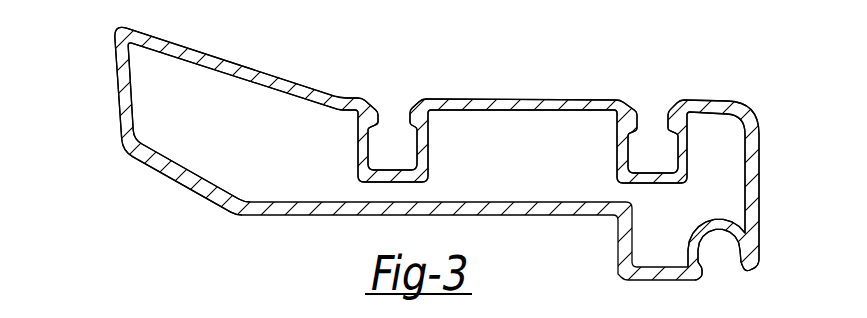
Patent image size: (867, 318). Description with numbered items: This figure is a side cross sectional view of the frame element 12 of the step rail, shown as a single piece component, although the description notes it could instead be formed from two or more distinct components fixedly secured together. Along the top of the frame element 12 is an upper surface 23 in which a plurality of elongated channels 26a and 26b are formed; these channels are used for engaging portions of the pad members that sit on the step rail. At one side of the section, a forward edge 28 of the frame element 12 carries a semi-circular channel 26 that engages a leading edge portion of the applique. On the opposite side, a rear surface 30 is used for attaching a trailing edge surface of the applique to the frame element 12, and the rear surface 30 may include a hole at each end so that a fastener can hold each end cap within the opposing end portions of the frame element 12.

The frame element 12 is at (768, 86).
The upper surface 23 is at (503, 98).
The elongated channel 26 is at (722, 224).
The elongated channel 26a is at (653, 157).
The elongated channel 26b is at (395, 170).
The forward edge 28 is at (762, 188).
The rear surface 30 is at (117, 88).